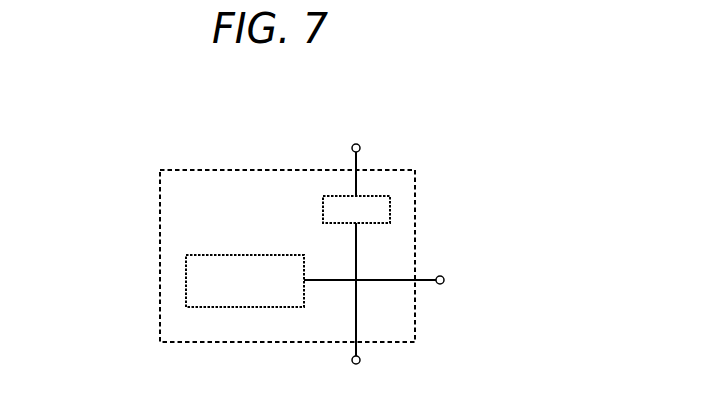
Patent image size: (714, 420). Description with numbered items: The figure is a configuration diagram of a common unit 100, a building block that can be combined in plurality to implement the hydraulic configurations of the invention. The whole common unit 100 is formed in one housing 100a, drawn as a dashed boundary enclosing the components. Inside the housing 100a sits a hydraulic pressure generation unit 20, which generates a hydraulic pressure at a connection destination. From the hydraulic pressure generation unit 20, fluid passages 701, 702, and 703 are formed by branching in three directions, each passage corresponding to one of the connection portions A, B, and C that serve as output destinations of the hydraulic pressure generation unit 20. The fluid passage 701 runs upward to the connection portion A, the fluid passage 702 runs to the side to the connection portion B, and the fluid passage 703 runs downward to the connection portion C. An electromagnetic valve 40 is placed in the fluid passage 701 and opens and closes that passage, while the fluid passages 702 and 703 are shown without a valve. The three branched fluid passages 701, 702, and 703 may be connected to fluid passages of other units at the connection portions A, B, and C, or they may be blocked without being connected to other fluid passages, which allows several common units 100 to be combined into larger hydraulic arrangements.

The common unit 100 is at (124, 93).
The housing 100a is at (158, 205).
The electromagnetic valve 40 is at (330, 207).
The hydraulic pressure generation unit 20 is at (192, 282).
The fluid passage 701 is at (358, 243).
The fluid passage 702 is at (380, 282).
The fluid passage 703 is at (352, 313).
The connection portion A is at (359, 144).
The connection portion B is at (442, 276).
The connection portion C is at (358, 364).